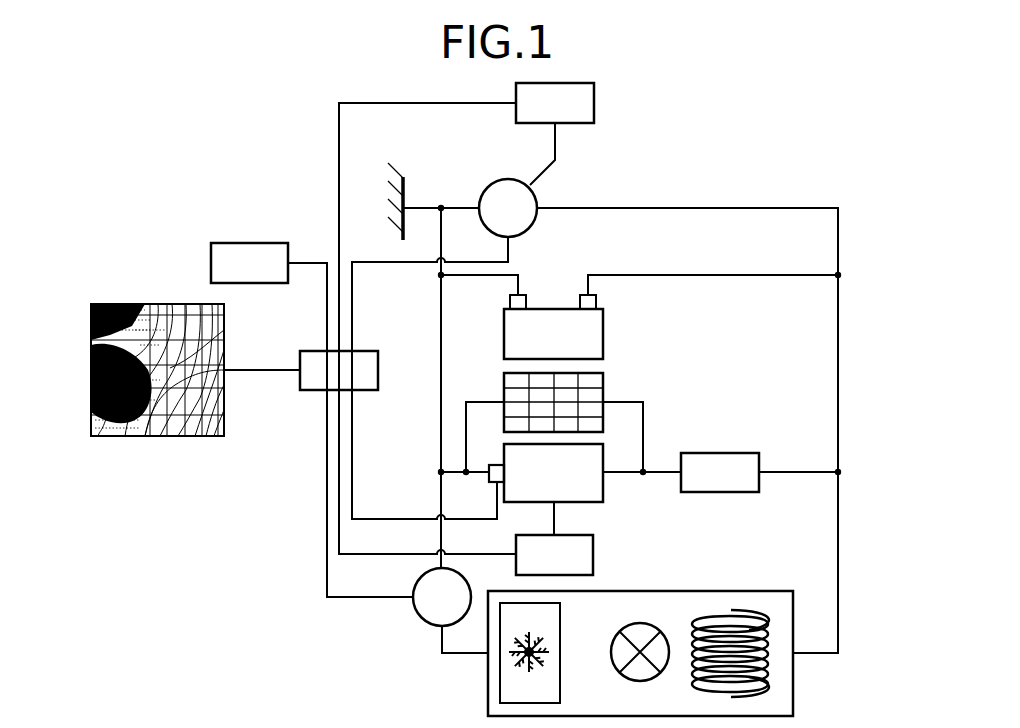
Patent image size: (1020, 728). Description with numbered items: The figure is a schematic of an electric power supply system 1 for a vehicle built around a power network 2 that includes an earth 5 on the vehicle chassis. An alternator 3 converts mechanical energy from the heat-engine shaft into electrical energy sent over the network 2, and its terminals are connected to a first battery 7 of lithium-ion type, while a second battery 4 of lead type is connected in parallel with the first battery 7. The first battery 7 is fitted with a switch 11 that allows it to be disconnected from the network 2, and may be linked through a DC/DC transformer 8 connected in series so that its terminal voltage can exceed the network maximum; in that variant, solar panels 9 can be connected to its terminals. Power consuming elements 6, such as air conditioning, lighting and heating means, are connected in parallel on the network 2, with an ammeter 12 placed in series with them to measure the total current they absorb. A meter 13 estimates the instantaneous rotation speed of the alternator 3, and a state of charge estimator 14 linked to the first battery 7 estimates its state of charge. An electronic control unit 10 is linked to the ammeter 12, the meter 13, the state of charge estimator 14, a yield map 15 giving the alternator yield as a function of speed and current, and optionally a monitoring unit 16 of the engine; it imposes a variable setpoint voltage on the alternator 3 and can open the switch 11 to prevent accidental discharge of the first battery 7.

The electric power supply system 1 is at (812, 182).
The power network 2 is at (838, 230).
The alternator 3 is at (513, 179).
The second battery 4 is at (603, 331).
The earth 5 is at (404, 188).
The power consuming elements 6 is at (684, 591).
The first battery 7 is at (603, 490).
The DC/DC transformer 8 is at (720, 453).
The solar panels 9 is at (603, 378).
The electronic control unit 10 is at (378, 371).
The switch 11 is at (493, 465).
The ammeter 12 is at (418, 617).
The meter 13 is at (594, 103).
The state of charge estimator 14 is at (593, 555).
The yield map 15 is at (157, 437).
The monitoring unit 16 is at (211, 263).